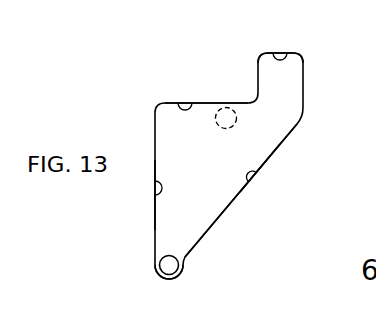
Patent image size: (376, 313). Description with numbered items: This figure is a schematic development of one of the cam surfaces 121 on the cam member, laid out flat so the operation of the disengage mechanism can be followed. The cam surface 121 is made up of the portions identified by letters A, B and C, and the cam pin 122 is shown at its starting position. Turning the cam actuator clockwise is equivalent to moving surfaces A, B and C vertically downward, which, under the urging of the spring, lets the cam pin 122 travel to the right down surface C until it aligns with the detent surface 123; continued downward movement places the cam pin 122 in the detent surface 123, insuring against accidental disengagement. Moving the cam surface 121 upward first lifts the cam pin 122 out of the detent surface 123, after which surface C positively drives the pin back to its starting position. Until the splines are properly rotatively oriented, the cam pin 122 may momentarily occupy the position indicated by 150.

The cam surface 121 is at (233, 200).
The cam pin 122 is at (182, 253).
The detent surface 123 is at (274, 53).
The cam pin position 150 is at (228, 105).
The surface A is at (155, 192).
The surface B is at (181, 103).
The surface C is at (250, 178).